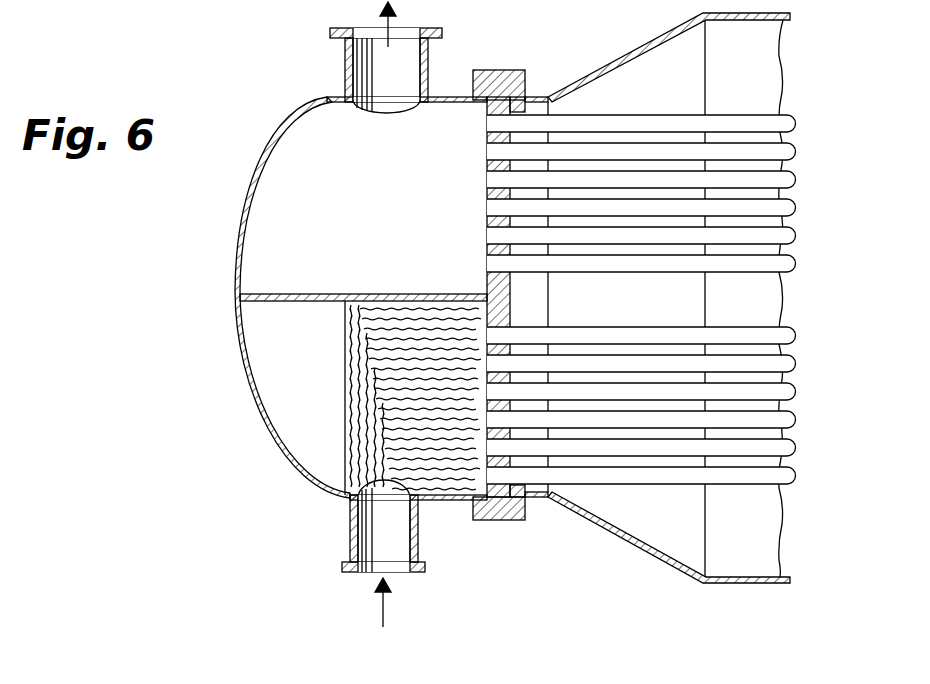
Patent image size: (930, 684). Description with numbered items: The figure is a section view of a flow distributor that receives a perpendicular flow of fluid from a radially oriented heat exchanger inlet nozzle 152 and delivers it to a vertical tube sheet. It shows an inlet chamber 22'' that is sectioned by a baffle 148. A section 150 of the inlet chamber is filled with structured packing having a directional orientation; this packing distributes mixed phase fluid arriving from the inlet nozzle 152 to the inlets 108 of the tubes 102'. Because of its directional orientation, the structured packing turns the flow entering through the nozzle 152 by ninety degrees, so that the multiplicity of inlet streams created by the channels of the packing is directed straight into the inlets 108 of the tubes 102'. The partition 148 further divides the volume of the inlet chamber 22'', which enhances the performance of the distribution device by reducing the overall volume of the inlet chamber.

The inlet chamber 22'' is at (331, 298).
The inlets of tubes 108 is at (492, 390).
The tubes 102' is at (631, 298).
The baffle 148 is at (345, 424).
The section of the inlet chamber 150 is at (445, 415).
The inlet nozzle 152 is at (350, 533).